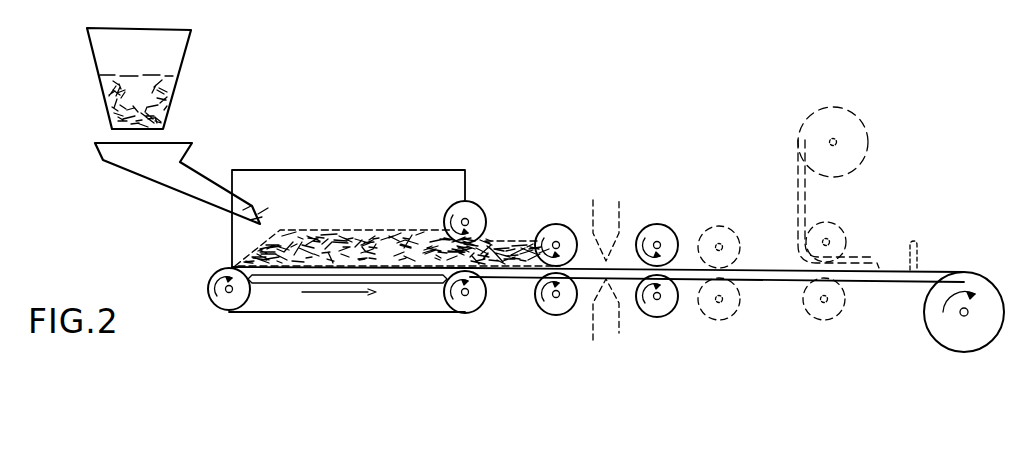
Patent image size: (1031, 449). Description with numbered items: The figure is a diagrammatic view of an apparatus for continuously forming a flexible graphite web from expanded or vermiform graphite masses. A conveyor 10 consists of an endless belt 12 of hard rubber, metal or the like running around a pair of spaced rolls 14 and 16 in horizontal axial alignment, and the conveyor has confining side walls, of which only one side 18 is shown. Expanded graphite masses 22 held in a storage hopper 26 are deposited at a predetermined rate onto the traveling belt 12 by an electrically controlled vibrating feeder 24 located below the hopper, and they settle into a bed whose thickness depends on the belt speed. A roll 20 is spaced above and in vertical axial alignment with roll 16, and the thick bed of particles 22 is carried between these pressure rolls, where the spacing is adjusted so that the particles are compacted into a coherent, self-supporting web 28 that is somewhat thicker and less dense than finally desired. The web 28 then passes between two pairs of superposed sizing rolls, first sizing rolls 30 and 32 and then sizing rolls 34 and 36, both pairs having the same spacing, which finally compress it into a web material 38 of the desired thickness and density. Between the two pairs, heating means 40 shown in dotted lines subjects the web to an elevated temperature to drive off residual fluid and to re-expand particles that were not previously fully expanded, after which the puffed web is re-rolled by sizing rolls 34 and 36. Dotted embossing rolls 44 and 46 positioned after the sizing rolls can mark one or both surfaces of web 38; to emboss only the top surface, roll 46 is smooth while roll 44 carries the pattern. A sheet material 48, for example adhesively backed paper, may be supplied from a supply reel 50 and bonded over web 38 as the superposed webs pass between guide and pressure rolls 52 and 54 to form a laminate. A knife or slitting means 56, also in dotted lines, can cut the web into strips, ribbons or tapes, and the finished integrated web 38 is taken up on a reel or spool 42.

The conveyor 10 is at (316, 313).
The endless belt 12 is at (375, 313).
The roll 14 is at (214, 308).
The roll 16 is at (461, 313).
The side wall 18 is at (372, 167).
The roll 20 is at (473, 210).
The vermiform graphite masses 22 is at (148, 103).
The vibrating feeder 24 is at (200, 172).
The storage hopper 26 is at (172, 62).
The self-supporting web 28 is at (505, 240).
The sizing roll 30 is at (565, 228).
The sizing roll 32 is at (553, 314).
The sizing roll 34 is at (667, 230).
The sizing roll 36 is at (662, 318).
The web material 38 is at (769, 281).
The heating means 40 is at (618, 334).
The reel 42 is at (930, 334).
The embossing roll 44 is at (728, 233).
The embossing roll 46 is at (722, 320).
The sheet material 48 is at (798, 175).
The supply reel 50 is at (855, 119).
The guide and pressure roll 52 is at (816, 318).
The guide and pressure roll 54 is at (840, 232).
The slitting means 56 is at (918, 251).